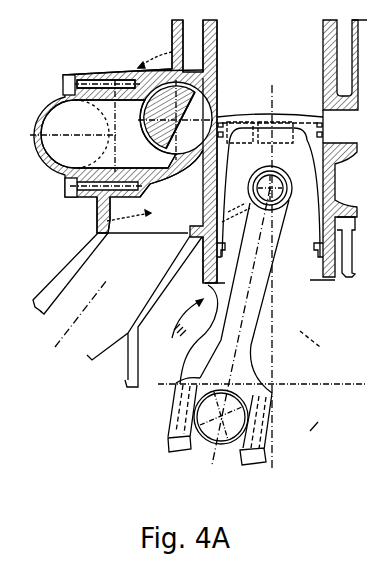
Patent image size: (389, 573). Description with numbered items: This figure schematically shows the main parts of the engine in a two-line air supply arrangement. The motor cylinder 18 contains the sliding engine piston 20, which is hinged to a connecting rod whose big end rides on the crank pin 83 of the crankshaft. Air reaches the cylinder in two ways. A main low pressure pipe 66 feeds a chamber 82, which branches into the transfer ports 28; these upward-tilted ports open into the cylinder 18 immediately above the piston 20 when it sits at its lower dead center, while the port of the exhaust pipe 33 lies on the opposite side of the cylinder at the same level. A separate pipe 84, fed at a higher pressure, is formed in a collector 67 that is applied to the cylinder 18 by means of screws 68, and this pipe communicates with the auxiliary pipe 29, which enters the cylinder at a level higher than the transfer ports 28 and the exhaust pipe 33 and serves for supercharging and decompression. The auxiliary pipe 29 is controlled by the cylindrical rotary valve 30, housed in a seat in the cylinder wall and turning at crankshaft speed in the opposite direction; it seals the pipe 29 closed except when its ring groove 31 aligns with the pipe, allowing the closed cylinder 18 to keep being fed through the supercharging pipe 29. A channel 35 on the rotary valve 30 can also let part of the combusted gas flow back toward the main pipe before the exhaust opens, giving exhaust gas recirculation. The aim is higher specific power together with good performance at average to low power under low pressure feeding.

The motor cylinder 18 is at (217, 57).
The engine piston 20 is at (304, 124).
The transfer ports 28 is at (206, 156).
The auxiliary pipe 29 is at (215, 96).
The rotary valve 30 is at (110, 73).
The ring groove 31 is at (198, 113).
The exhaust pipe 33 is at (322, 112).
The channel 35 is at (137, 71).
The main low pressure pipe 66 is at (95, 286).
The collector 67 is at (55, 190).
The screws 68 is at (71, 75).
The chamber 82 is at (97, 224).
The crank pin 83 is at (205, 409).
The pipe 84 is at (74, 122).